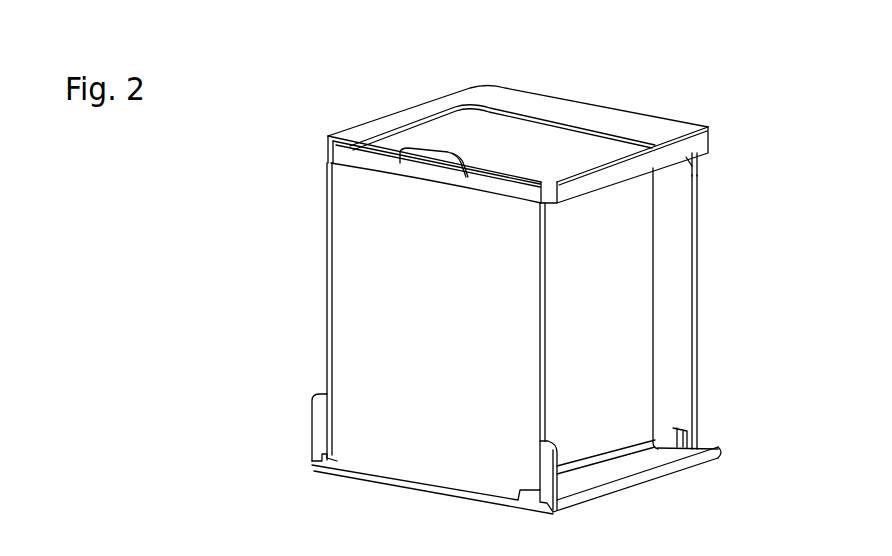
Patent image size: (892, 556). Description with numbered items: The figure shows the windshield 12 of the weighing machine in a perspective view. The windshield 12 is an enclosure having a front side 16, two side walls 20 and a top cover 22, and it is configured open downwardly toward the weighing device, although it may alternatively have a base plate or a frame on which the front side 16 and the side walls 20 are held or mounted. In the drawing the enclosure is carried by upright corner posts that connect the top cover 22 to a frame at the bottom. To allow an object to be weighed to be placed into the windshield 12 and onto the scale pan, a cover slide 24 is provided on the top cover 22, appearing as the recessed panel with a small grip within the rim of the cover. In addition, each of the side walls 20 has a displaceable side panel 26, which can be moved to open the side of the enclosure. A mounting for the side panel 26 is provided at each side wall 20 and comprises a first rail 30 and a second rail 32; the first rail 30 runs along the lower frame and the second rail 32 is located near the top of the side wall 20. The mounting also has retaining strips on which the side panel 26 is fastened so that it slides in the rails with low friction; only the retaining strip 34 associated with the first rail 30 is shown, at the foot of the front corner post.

The windshield 12 is at (617, 124).
The front side 16 is at (352, 350).
The side walls 20 is at (327, 222).
The top cover 22 is at (464, 95).
The cover slide 24 is at (498, 132).
The side panel 26 is at (632, 337).
The first rail 30 is at (712, 449).
The second rail 32 is at (700, 167).
The retaining strip 34 is at (535, 472).